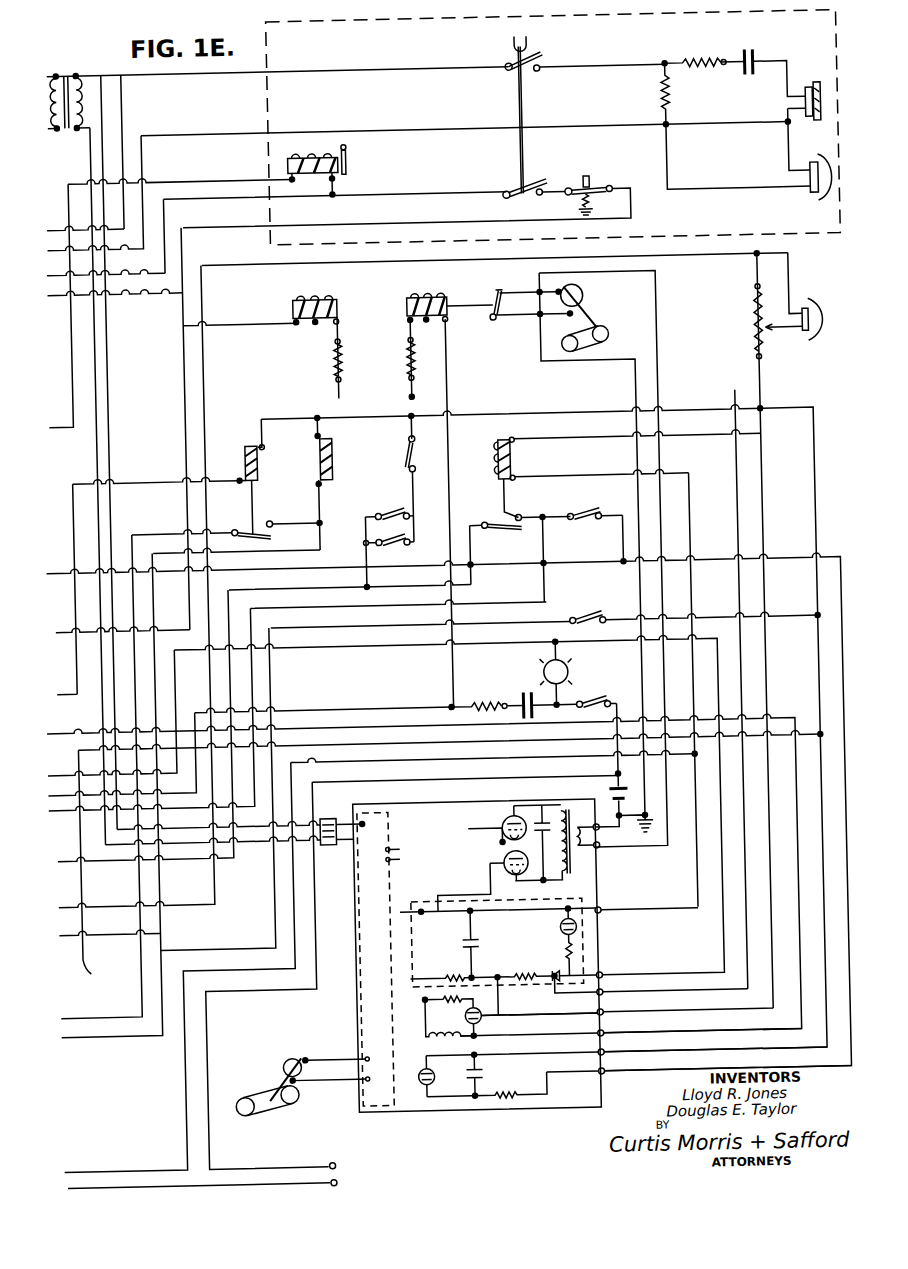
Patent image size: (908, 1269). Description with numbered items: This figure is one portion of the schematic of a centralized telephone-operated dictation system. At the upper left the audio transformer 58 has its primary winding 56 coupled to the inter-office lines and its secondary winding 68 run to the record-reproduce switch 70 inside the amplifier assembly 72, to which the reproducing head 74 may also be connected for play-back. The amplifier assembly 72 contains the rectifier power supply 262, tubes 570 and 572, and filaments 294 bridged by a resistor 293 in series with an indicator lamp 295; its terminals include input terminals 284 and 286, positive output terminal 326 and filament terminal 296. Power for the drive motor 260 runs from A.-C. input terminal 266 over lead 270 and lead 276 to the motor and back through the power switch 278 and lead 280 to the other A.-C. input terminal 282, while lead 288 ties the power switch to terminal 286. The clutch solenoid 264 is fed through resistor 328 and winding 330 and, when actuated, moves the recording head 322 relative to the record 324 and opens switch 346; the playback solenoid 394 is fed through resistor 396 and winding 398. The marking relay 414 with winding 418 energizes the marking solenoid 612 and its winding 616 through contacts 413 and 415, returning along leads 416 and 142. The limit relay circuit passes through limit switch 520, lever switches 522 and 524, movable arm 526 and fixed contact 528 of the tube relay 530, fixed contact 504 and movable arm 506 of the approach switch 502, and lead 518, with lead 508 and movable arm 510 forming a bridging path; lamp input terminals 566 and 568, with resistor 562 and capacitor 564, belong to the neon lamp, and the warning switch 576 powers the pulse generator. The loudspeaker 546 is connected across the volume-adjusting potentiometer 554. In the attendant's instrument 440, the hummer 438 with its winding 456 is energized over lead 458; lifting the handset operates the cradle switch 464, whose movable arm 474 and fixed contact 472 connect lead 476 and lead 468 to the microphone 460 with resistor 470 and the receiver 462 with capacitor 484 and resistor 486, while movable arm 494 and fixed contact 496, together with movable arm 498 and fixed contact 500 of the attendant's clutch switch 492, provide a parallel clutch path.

The audio transformer 58 is at (75, 62).
The primary winding 56 is at (46, 144).
The secondary winding 68 is at (88, 124).
The attendant's instrument 440 is at (279, 98).
The lead 476 is at (297, 68).
The lead 468 is at (296, 129).
The lead 458 is at (212, 194).
The hummer winding 456 is at (324, 180).
The hummer 438 is at (371, 167).
The movable arm 474 is at (517, 63).
The fixed contact 472 is at (552, 72).
The attendant's cradle switch 464 is at (522, 96).
The movable arm 494 is at (516, 191).
The fixed contact 496 is at (546, 198).
The attendant's clutch switch 492 is at (611, 176).
The fixed contact 500 is at (624, 190).
The movable arm 498 is at (604, 209).
The resistor 486 is at (714, 62).
The capacitor 484 is at (764, 54).
The resistor 470 is at (673, 96).
The receiver 462 is at (821, 92).
The microphone 460 is at (824, 166).
The playback solenoid 394 is at (290, 311).
The playback solenoid winding 398 is at (320, 322).
The resistor 396 is at (341, 356).
The clutch solenoid 264 is at (405, 311).
The resistor 328 is at (414, 356).
The clutch solenoid winding 330 is at (438, 322).
The switch 346 is at (503, 284).
The recording head 322 is at (599, 302).
The record 324 is at (624, 333).
The volume-adjusting potentiometer 554 is at (761, 312).
The loudspeaker 546 is at (814, 306).
The marking relay 414 is at (251, 434).
The marking relay winding 418 is at (247, 463).
The marking solenoid 612 is at (325, 425).
The solenoid winding 616 is at (322, 456).
The lead 416 is at (348, 416).
The limit switch 520 is at (403, 457).
The lever switch 522 is at (371, 517).
The lever switch 524 is at (371, 543).
The relay contact 415 is at (273, 516).
The relay contact 413 is at (266, 535).
The tube relay 530 is at (493, 465).
The fixed contact 528 is at (521, 514).
The movable arm 526 is at (510, 532).
The movable arm 506 is at (577, 522).
The fixed contact 504 is at (601, 523).
The approach switch 502 is at (593, 559).
The lead 518 is at (50, 565).
The warning switch 576 is at (609, 606).
The lead 508 is at (540, 604).
The drive motor 260 is at (534, 675).
The power switch 278 is at (611, 692).
The lead 276 is at (720, 640).
The lead 270 is at (60, 725).
The lead 142 is at (340, 742).
The lead 288 is at (340, 759).
The lead 280 is at (340, 779).
The A.-C. input terminal 282 is at (324, 1162).
The A.-C. input terminal 266 is at (326, 1181).
The record-reproduce switch 70 is at (381, 834).
The tube 570 is at (490, 831).
The tube 572 is at (492, 865).
The rectifier power supply 262 is at (413, 908).
The power supply input terminal 286 is at (596, 913).
The power supply input terminal 284 is at (596, 978).
The positive output terminal 326 is at (596, 995).
The filament terminal 296 is at (596, 1036).
The lamp input terminal 566 is at (596, 1055).
The lamp input terminal 568 is at (596, 1074).
The resistor 293 is at (436, 997).
The indicator lamp 295 is at (473, 1018).
The filaments 294 is at (425, 1044).
The movable arm 510 is at (409, 1076).
The capacitor 564 is at (472, 1072).
The resistor 562 is at (490, 1096).
The reproducing head 74 is at (276, 1049).
The amplifier assembly 72 is at (455, 1110).